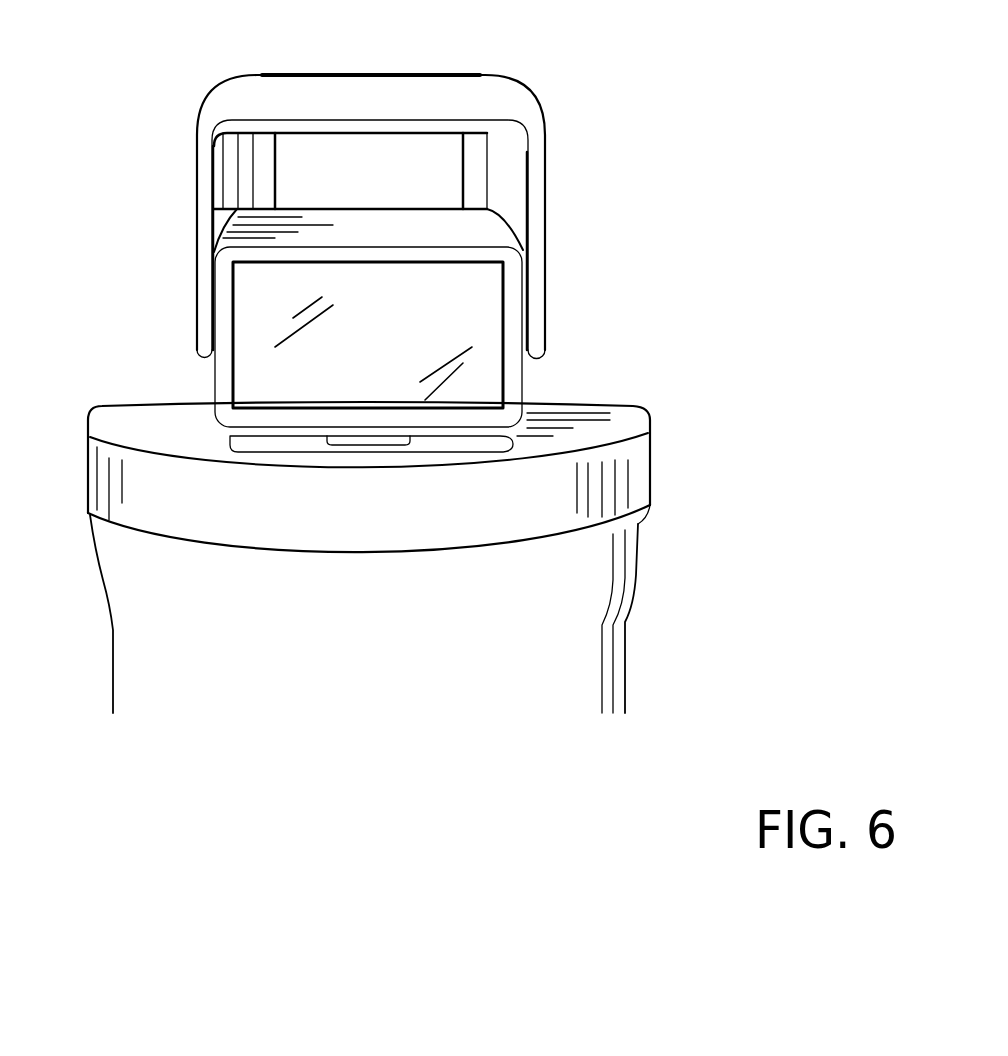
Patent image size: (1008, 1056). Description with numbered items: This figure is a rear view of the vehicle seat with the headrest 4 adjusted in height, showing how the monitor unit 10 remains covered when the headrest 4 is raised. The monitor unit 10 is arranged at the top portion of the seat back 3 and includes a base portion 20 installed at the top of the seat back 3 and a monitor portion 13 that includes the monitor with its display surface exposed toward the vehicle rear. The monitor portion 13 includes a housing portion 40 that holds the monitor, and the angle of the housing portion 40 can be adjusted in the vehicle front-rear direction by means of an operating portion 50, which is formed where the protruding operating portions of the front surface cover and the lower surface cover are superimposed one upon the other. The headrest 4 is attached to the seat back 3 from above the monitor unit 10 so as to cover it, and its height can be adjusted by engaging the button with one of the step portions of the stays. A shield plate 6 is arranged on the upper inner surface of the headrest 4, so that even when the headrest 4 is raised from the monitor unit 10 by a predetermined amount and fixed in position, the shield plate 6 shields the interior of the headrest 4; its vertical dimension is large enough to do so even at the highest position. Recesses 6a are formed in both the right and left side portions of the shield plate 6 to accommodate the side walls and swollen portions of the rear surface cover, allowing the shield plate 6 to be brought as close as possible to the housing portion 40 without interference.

The seat back 3 is at (612, 480).
The headrest 4 is at (418, 98).
The shield plate 6 is at (388, 173).
The recesses 6a is at (260, 172).
The monitor unit 10 is at (187, 388).
The monitor portion 13 is at (368, 318).
The base portion 20 is at (443, 443).
The housing portion 40 is at (513, 377).
The operating portion 50 is at (357, 440).